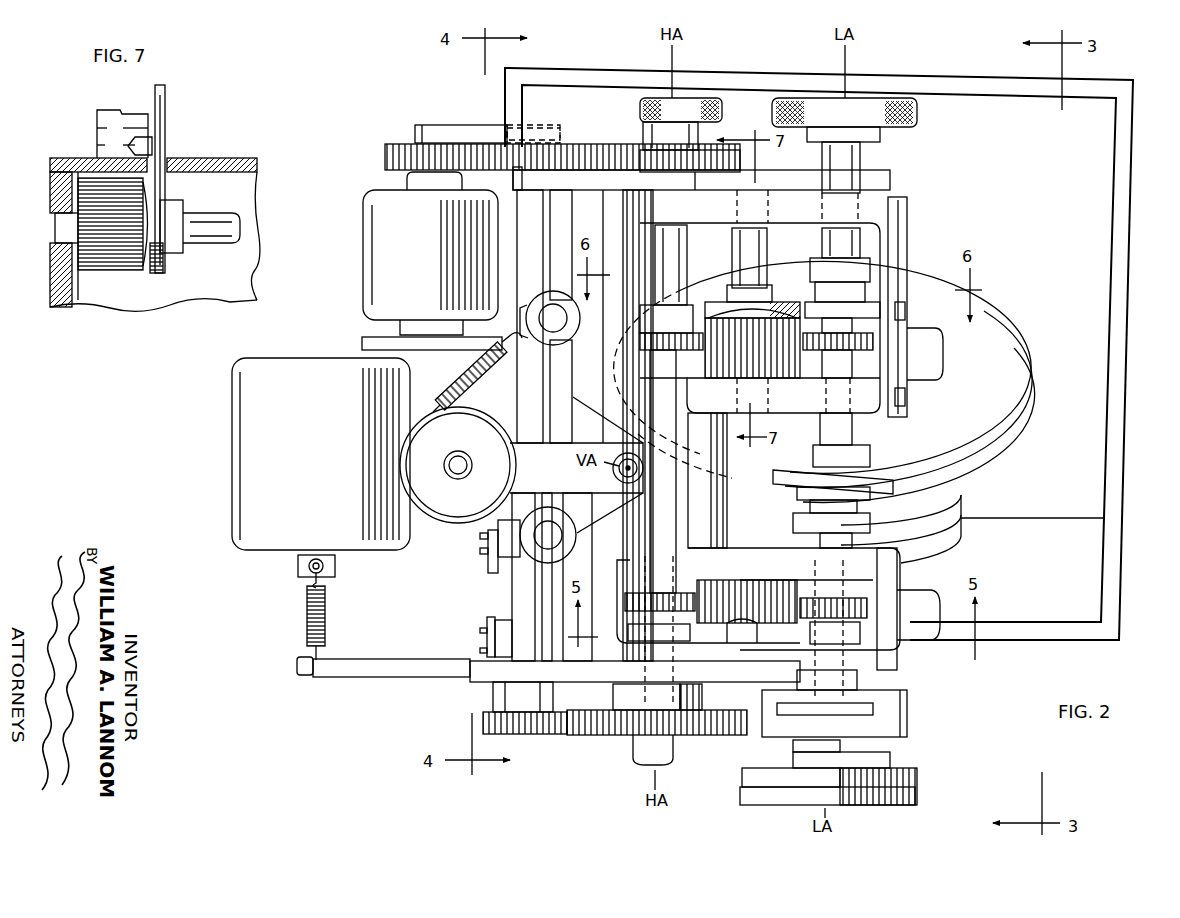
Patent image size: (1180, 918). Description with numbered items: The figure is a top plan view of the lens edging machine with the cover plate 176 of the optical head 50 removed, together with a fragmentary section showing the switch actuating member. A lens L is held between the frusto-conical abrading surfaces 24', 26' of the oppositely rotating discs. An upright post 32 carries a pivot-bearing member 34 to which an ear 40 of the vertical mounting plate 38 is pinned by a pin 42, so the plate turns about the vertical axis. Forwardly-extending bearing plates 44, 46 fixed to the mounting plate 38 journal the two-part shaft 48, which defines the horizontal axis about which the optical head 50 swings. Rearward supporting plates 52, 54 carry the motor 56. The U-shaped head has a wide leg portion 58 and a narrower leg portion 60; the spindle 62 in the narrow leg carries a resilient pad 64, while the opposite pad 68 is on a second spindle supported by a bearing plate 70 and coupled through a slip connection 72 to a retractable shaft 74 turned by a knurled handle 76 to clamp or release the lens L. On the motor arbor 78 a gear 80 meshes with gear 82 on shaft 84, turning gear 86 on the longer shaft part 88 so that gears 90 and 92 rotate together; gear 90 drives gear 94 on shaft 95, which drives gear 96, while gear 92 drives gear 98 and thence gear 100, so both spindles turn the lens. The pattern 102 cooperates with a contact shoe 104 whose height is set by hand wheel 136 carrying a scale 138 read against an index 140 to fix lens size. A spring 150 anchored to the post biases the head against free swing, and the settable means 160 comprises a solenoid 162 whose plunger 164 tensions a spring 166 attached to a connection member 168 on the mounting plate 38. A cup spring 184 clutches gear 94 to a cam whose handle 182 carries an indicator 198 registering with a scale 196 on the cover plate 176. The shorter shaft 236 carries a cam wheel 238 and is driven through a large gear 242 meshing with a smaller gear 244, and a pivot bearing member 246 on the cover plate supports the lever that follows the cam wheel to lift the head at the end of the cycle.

In FIG. 2, the frusto-conical abrading surface 24' is at (848, 374).
In FIG. 2, the frusto-conical abrading surface 26' is at (941, 425).
In FIG. 2, the upright or post 32 is at (460, 520).
In FIG. 2, the pivot-bearing member 34 is at (540, 440).
In FIG. 2, the mounting plate 38 is at (560, 428).
In FIG. 2, the ears 40 is at (572, 505).
In FIG. 2, the pins 42 is at (614, 478).
In FIG. 2, the bearing plate 44 is at (650, 197).
In FIG. 2, the bearing plate 46 is at (490, 668).
In FIG. 2, the two-part shaft 48 is at (676, 398).
In FIG. 2, the optical head 50 is at (927, 212).
In FIG. 2, the supporting plate 52 is at (455, 125).
In FIG. 2, the supporting plate 54 is at (372, 338).
In FIG. 2, the motor 56 is at (370, 246).
In FIG. 7, the wide leg portion 58 is at (64, 296).
In FIG. 2, the wide leg portion 58 is at (910, 203).
In FIG. 2, the narrower leg portion 60 is at (880, 665).
In FIG. 2, the spindle 62 is at (800, 640).
In FIG. 2, the resilient lens engaging pad 64 is at (860, 505).
In FIG. 2, the resilient lens engaging pad 68 is at (865, 450).
In FIG. 2, the bearing plate 70 is at (880, 300).
In FIG. 2, the slip connection 72 is at (862, 252).
In FIG. 2, the retractable shaft 74 is at (860, 163).
In FIG. 2, the knurled handle 76 is at (918, 118).
In FIG. 2, the arbor 78 is at (407, 183).
In FIG. 2, the gear 80 is at (390, 144).
In FIG. 2, the gear 82 is at (575, 140).
In FIG. 2, the shaft 84 is at (537, 222).
In FIG. 2, the gear 86 is at (628, 150).
In FIG. 2, the longer shaft part 88 is at (673, 256).
In FIG. 2, the gear 90 is at (627, 343).
In FIG. 2, the gear 92 is at (682, 585).
In FIG. 2, the gear 94 is at (765, 380).
In FIG. 7, the shaft 95 is at (210, 208).
In FIG. 2, the shaft 95 is at (757, 256).
In FIG. 7, the gear 96 is at (108, 272).
In FIG. 2, the gear 96 is at (857, 353).
In FIG. 2, the gear 98 is at (775, 580).
In FIG. 2, the gear 100 is at (868, 606).
In FIG. 2, the pattern or former 102 is at (875, 708).
In FIG. 2, the contact shoe 104 is at (907, 729).
In FIG. 2, the hand wheel 136 is at (918, 790).
In FIG. 2, the scale 138 is at (742, 775).
In FIG. 2, the index 140 is at (890, 760).
In FIG. 2, the spring 150 is at (480, 374).
In FIG. 2, the means 160 is at (285, 509).
In FIG. 2, the solenoid 162 is at (232, 468).
In FIG. 2, the plunger 164 is at (300, 572).
In FIG. 2, the spring 166 is at (307, 628).
In FIG. 2, the connection member 168 is at (340, 676).
In FIG. 7, the cover plate 176 is at (250, 160).
In FIG. 7, the handle 182 is at (166, 124).
In FIG. 7, the cup spring 184 is at (152, 252).
In FIG. 7, the scale 196 is at (105, 108).
In FIG. 7, the indicator 198 is at (152, 148).
In FIG. 2, the shorter shaft 236 is at (703, 688).
In FIG. 2, the cam wheel 238 is at (652, 640).
In FIG. 2, the large gear 242 is at (585, 736).
In FIG. 2, the smaller gear 244 is at (483, 722).
In FIG. 2, the pivot bearing member 246 is at (493, 694).
In FIG. 2, the lens L is at (893, 500).